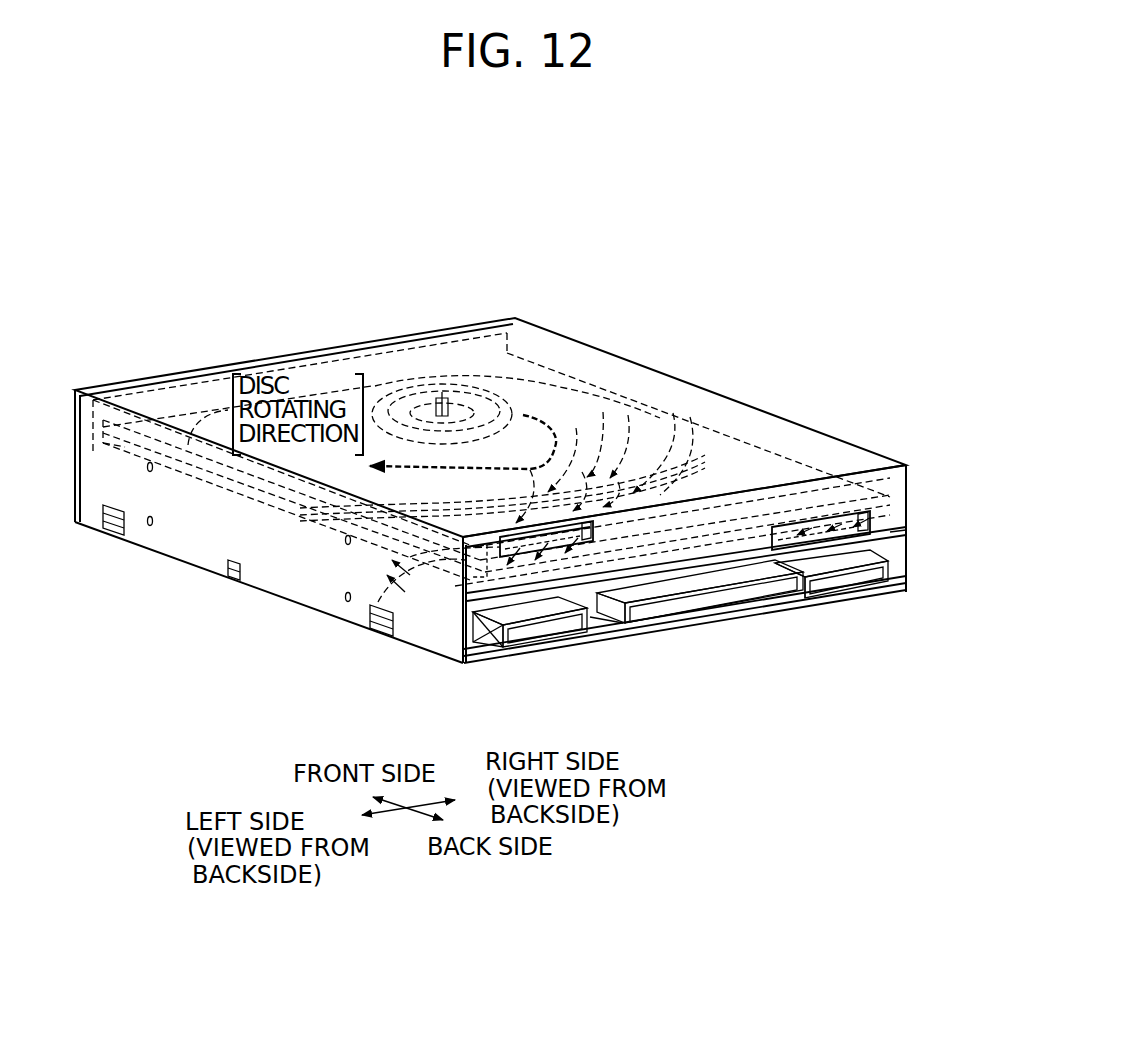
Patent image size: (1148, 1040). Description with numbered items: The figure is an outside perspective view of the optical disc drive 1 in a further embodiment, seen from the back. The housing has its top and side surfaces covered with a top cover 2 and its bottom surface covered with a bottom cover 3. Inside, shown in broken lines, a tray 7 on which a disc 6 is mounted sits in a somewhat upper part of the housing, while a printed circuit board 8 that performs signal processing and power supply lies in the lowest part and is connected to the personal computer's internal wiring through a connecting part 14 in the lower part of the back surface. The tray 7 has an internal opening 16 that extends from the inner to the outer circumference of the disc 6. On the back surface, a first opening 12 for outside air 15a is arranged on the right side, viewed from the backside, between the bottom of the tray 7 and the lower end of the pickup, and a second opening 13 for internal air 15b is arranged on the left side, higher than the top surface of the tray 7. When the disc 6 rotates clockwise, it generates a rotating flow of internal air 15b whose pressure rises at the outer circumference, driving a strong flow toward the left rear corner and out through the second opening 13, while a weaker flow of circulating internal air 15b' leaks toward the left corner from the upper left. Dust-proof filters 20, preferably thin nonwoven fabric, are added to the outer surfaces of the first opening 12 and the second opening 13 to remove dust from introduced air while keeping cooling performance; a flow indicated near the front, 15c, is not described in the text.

The optical disc drive 1 is at (485, 246).
The top cover 2 is at (620, 370).
The bottom cover 3 is at (743, 618).
The disc 6 is at (560, 410).
The tray 7 is at (760, 463).
The printed circuit board 8 is at (595, 620).
The first opening 12 is at (817, 517).
The second opening 13 is at (500, 537).
The connecting part 14 is at (723, 600).
The outside air 15a is at (887, 533).
The internal air 15b is at (646, 456).
The circulating internal air 15b' is at (338, 627).
The connector housing 15c is at (462, 648).
The internal opening 16 is at (640, 490).
The dust-proof filter 20 is at (787, 553).